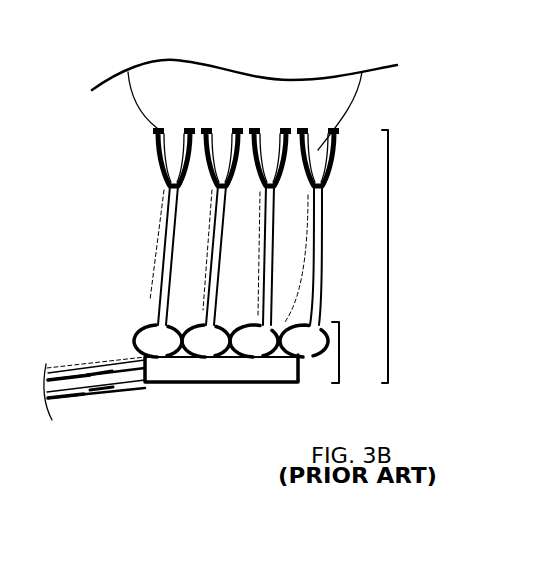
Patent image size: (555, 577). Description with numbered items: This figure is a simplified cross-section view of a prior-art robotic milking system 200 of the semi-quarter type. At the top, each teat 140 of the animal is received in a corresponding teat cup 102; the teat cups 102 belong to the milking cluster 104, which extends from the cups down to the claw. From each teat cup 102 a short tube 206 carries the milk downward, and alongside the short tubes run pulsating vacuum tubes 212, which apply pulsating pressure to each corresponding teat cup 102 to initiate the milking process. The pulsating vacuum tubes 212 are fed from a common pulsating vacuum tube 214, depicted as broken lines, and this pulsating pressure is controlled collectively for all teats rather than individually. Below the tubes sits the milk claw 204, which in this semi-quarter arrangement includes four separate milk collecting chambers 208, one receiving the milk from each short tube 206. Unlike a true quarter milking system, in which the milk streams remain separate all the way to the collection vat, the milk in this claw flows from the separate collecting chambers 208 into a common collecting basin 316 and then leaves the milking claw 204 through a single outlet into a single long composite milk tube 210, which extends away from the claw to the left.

The milking system 200 is at (170, 21).
The teat 140 is at (313, 152).
The teat cup 102 is at (163, 139).
The milking cluster 104 is at (407, 256).
The pulsating vacuum tube 212 is at (205, 250).
The short tube 206 is at (272, 212).
The milk collecting chamber 208 is at (143, 327).
The milk claw 204 is at (357, 352).
The common collecting basin 316 is at (214, 383).
The long composite milk tube 210 is at (67, 402).
The common pulsating vacuum tube 214 is at (88, 367).